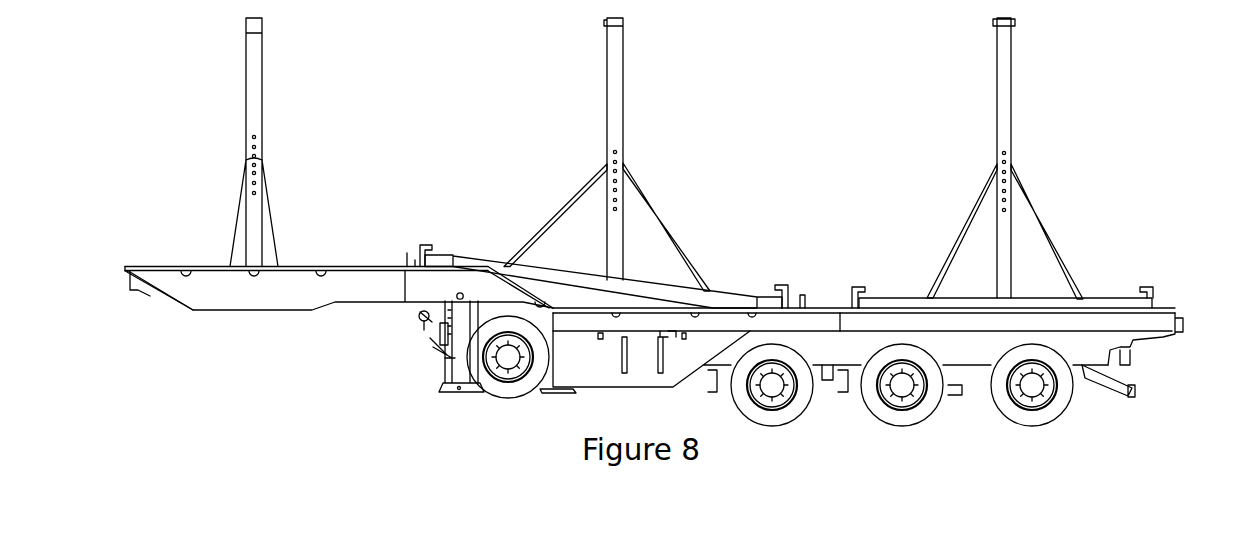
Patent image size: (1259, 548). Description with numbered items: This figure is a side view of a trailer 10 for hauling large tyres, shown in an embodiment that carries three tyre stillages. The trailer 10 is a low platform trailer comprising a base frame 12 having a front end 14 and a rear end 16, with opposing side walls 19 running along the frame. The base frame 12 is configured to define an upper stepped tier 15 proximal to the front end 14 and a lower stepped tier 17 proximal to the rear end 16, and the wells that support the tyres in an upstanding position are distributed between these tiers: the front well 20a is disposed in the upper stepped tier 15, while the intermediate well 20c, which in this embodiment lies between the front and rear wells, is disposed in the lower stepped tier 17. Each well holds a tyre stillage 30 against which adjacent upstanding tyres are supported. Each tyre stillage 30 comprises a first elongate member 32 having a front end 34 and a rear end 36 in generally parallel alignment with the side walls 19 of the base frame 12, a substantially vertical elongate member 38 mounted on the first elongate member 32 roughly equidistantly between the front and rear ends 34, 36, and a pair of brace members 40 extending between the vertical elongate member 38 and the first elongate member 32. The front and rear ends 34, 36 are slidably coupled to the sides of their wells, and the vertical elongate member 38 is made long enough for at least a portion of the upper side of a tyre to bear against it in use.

The trailer 10 is at (1086, 87).
The base frame 12 is at (362, 282).
The front end 14 is at (138, 292).
The upper stepped tier 15 is at (418, 178).
The rear end 16 is at (1183, 318).
The lower stepped tier 17 is at (847, 246).
The side walls 19 is at (256, 290).
The front well 20a is at (300, 268).
The intermediate well 20c is at (578, 305).
The tyre stillage 30 is at (300, 86).
The first elongate member 32 is at (657, 285).
The front end 34 is at (437, 260).
The rear end 36 is at (770, 298).
The vertical elongate member 38 is at (254, 69).
The brace members 40 is at (240, 200).